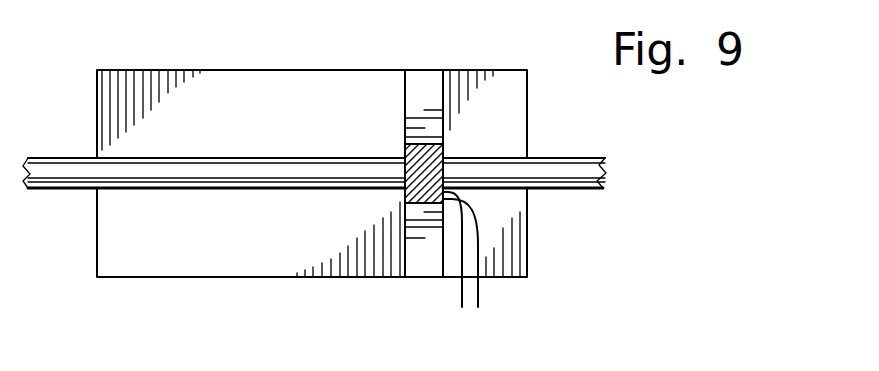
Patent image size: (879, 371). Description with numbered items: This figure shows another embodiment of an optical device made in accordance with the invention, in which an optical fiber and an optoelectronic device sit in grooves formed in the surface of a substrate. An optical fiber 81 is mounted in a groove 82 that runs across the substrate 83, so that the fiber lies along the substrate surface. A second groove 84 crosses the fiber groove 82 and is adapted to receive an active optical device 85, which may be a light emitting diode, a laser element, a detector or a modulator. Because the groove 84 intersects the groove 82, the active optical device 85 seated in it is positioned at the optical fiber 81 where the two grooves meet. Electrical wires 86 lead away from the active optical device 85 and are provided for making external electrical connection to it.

The optical fiber 81 is at (560, 158).
The groove 82 is at (268, 162).
The substrate 83 is at (294, 73).
The groove 84 is at (423, 82).
The active optical device 85 is at (404, 157).
The electrical wires 86 is at (462, 287).